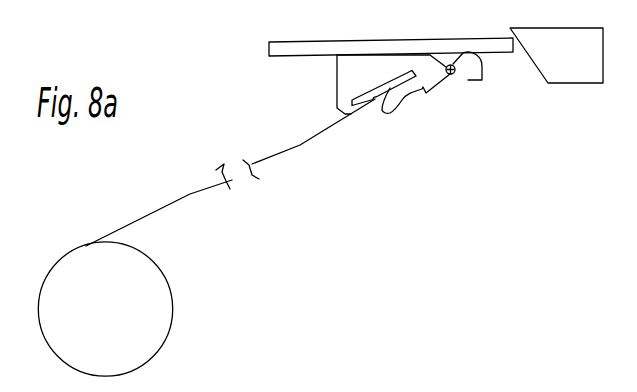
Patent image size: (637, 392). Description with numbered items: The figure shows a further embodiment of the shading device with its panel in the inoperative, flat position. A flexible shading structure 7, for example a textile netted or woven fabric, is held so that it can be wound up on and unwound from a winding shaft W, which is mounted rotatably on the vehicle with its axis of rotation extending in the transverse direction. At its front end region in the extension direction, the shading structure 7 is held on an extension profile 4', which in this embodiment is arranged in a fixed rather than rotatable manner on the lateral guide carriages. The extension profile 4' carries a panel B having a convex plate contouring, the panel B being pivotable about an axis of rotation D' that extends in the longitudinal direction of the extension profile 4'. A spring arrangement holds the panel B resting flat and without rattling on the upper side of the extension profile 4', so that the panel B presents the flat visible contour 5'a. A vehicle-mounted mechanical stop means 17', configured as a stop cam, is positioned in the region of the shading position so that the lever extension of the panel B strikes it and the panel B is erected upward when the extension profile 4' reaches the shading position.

The panel B is at (375, 43).
The flat visible contour 5'a is at (201, 49).
The extension profile 4' is at (401, 129).
The axis of rotation D' is at (470, 105).
The mechanical stop means 17' is at (556, 98).
The shading structure 7 is at (275, 166).
The winding shaft W is at (162, 317).